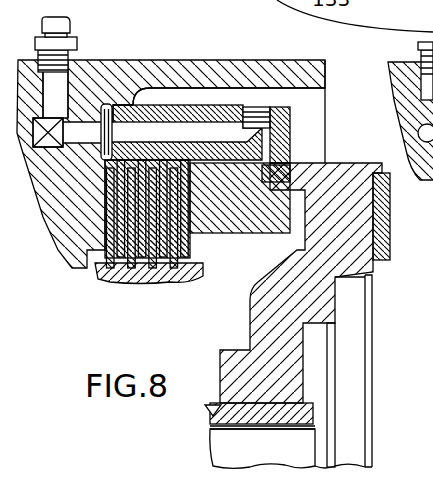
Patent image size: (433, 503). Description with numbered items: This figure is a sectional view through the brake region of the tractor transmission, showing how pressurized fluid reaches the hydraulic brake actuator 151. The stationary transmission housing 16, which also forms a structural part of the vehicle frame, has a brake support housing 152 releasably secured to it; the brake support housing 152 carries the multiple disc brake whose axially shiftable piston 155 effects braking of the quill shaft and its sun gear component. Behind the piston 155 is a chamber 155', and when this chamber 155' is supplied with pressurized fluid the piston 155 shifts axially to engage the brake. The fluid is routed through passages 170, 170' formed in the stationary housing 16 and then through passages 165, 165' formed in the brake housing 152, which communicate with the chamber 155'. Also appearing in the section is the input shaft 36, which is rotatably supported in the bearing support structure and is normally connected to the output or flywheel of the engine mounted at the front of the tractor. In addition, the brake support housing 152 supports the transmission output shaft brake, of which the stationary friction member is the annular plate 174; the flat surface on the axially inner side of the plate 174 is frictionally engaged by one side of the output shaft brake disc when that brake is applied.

The stationary transmission housing 16 is at (363, 91).
The input shaft 36 is at (213, 447).
The multiple disc hydraulic actuated brake 151 is at (187, 251).
The brake support housing 152 is at (166, 100).
The piston 155 is at (240, 223).
The chamber 155' is at (241, 189).
The passage 165 is at (183, 111).
The passage 165' is at (292, 135).
The passage 170 is at (77, 67).
The passage 170' is at (65, 154).
The annular plate 174 is at (380, 262).